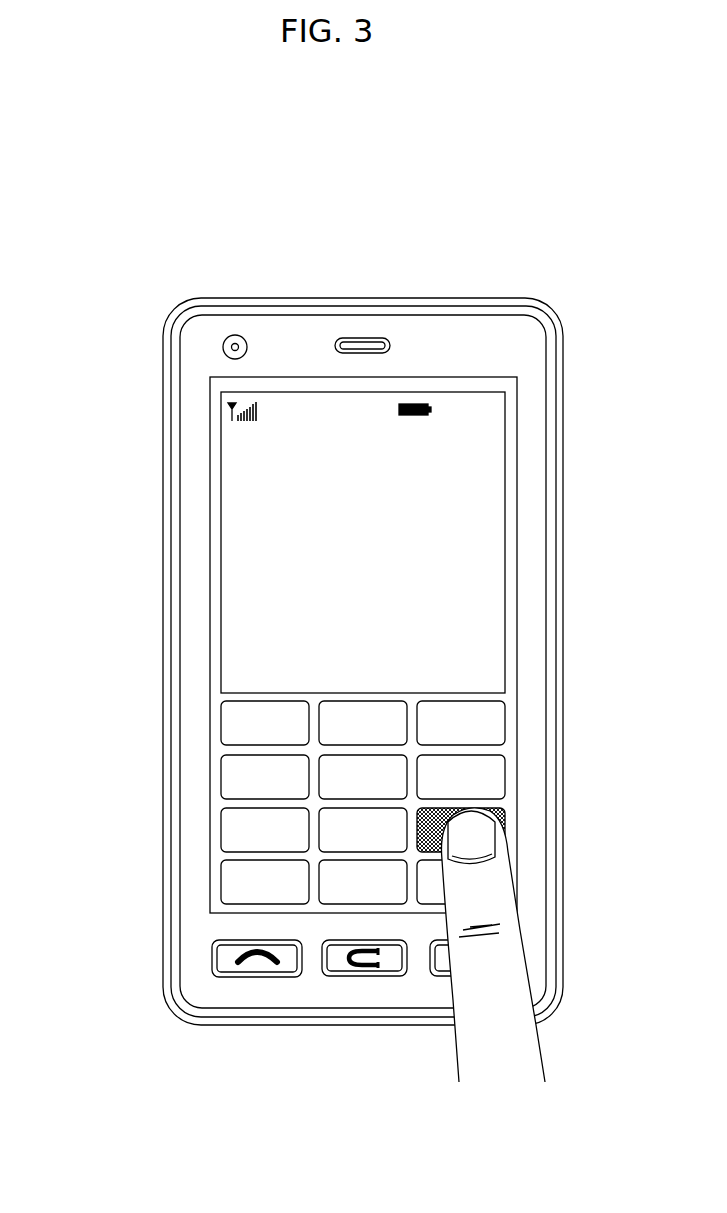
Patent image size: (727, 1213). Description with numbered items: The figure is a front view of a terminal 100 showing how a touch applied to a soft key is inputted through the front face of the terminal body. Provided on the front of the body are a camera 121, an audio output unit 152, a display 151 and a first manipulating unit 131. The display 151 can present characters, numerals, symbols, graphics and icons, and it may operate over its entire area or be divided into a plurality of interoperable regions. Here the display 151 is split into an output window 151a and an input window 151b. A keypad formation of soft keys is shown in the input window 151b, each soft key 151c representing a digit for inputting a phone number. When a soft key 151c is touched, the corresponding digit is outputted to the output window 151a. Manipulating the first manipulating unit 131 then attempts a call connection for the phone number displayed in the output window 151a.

The terminal 100 is at (146, 302).
The camera 121 is at (235, 336).
The audio output unit 152 is at (358, 346).
The display 151 is at (205, 512).
The output window 151a is at (230, 603).
The input window 151b is at (218, 833).
The soft key 151c is at (227, 733).
The first manipulating unit 131 is at (257, 964).